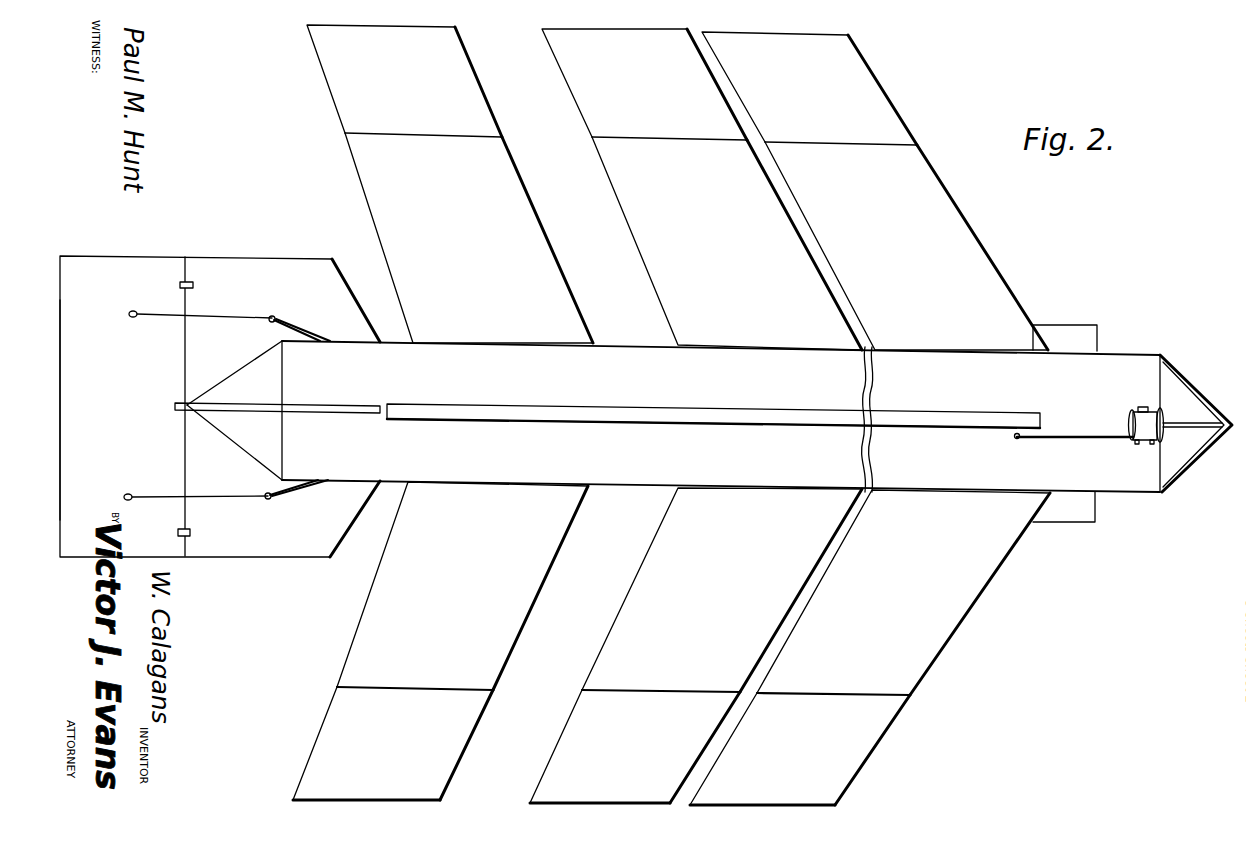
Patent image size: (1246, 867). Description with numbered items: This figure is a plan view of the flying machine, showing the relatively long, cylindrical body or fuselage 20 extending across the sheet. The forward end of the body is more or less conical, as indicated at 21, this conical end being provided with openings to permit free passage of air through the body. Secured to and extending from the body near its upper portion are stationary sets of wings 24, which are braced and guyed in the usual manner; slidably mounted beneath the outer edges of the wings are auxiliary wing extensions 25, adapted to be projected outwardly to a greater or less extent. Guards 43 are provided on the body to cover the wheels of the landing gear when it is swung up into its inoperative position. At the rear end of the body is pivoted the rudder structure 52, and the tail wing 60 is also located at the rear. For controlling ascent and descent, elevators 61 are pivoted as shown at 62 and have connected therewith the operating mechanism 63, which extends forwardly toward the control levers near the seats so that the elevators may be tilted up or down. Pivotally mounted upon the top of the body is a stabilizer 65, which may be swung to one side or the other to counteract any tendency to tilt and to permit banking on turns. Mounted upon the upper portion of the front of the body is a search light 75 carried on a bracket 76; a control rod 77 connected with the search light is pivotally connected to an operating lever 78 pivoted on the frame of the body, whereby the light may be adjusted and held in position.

The body or fuselage 20 is at (673, 416).
The conical end 21 is at (1179, 400).
The wings 24 is at (640, 206).
The auxiliary wing extensions 25 is at (565, 54).
The guards 43 is at (1073, 333).
The rudder structure 52 is at (315, 408).
The tail wing 60 is at (280, 262).
The elevators 61 is at (85, 410).
The pivot 62 is at (192, 282).
The operating mechanism 63 is at (218, 315).
The stabilizer 65 is at (663, 417).
The search light 75 is at (1137, 413).
The bracket 76 is at (1142, 444).
The control rod 77 is at (1083, 444).
The operating lever 78 is at (1017, 440).